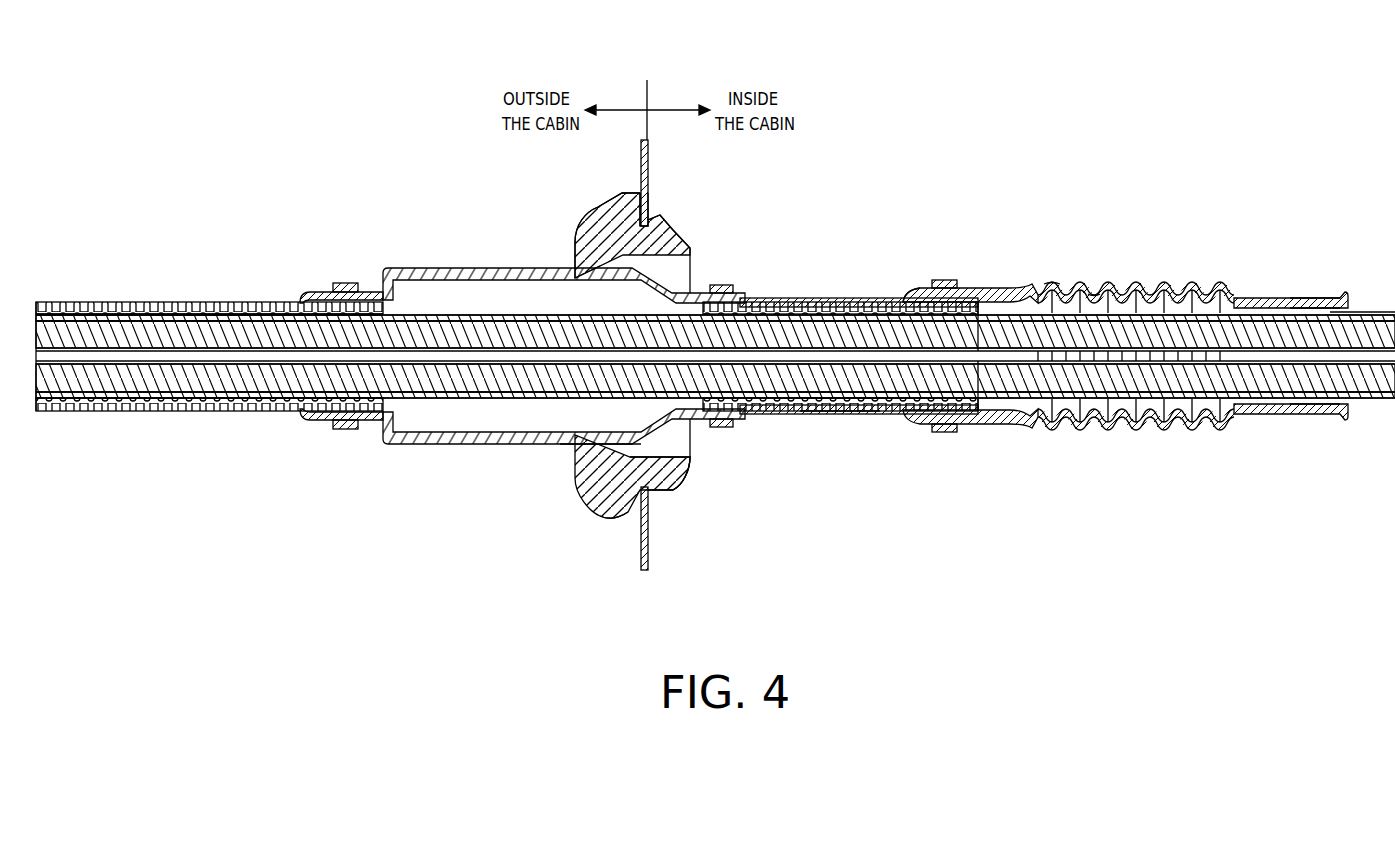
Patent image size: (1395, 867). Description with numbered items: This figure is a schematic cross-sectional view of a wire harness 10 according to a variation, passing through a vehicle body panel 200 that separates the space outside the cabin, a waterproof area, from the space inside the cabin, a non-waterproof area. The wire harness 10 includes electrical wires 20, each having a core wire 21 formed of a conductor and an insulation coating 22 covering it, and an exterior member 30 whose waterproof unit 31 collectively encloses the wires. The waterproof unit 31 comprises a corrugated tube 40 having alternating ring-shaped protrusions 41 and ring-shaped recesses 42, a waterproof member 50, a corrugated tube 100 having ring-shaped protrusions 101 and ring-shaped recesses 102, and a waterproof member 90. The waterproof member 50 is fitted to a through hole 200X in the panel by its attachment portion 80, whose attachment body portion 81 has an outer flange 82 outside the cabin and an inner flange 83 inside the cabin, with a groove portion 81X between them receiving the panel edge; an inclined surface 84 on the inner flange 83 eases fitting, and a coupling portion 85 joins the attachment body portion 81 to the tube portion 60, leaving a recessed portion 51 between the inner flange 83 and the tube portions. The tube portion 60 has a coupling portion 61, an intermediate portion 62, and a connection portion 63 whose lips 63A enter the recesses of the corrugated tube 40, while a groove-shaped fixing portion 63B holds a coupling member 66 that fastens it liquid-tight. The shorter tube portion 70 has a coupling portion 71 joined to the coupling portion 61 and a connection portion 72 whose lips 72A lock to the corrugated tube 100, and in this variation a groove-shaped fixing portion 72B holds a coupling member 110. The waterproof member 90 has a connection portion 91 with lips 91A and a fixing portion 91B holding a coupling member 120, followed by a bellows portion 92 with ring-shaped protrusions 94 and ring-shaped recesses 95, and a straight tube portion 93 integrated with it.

The wire harness 10 is at (1203, 101).
The electrical wire 20 is at (140, 258).
The core wire 21 is at (123, 327).
The insulation coating 22 is at (75, 302).
The exterior member 30 is at (1340, 322).
The waterproof unit 31 is at (1312, 294).
The corrugated tube 40 is at (235, 251).
The ring-shaped protrusion 41 is at (193, 303).
The ring-shaped recess 42 is at (198, 303).
The waterproof member 50 is at (587, 502).
The recessed portion 51 is at (693, 455).
The tube portion 60 is at (555, 487).
The coupling portion 61 is at (575, 468).
The intermediate portion 62 is at (478, 444).
The connection portion 63 is at (368, 430).
The lip 63A is at (313, 425).
The fixing portion 63B is at (343, 428).
The coupling member 66 is at (338, 284).
The tube portion 70 is at (770, 219).
The coupling portion 71 is at (700, 298).
The connection portion 72 is at (722, 286).
The lip 72A is at (747, 302).
The fixing portion 72B is at (717, 422).
The attachment portion 80 is at (519, 195).
The attachment body portion 81 is at (592, 203).
The groove portion 81X is at (648, 210).
The outer flange 82 is at (623, 192).
The inner flange 83 is at (678, 227).
The inclined surface 84 is at (682, 480).
The coupling portion 85 is at (573, 270).
The waterproof member 90 is at (1210, 200).
The connection portion 91 is at (997, 287).
The lip 91A is at (900, 293).
The fixing portion 91B is at (937, 427).
The bellows portion 92 is at (1153, 239).
The straight tube portion 93 is at (1253, 297).
The ring-shaped protrusion 94 is at (1080, 283).
The ring-shaped recess 95 is at (1123, 297).
The corrugated tube 100 is at (903, 465).
The ring-shaped protrusion 101 is at (842, 412).
The ring-shaped recess 102 is at (867, 412).
The coupling member 110 is at (733, 298).
The coupling member 120 is at (943, 282).
The vehicle body panel 200 is at (648, 543).
The through hole 200X is at (630, 523).